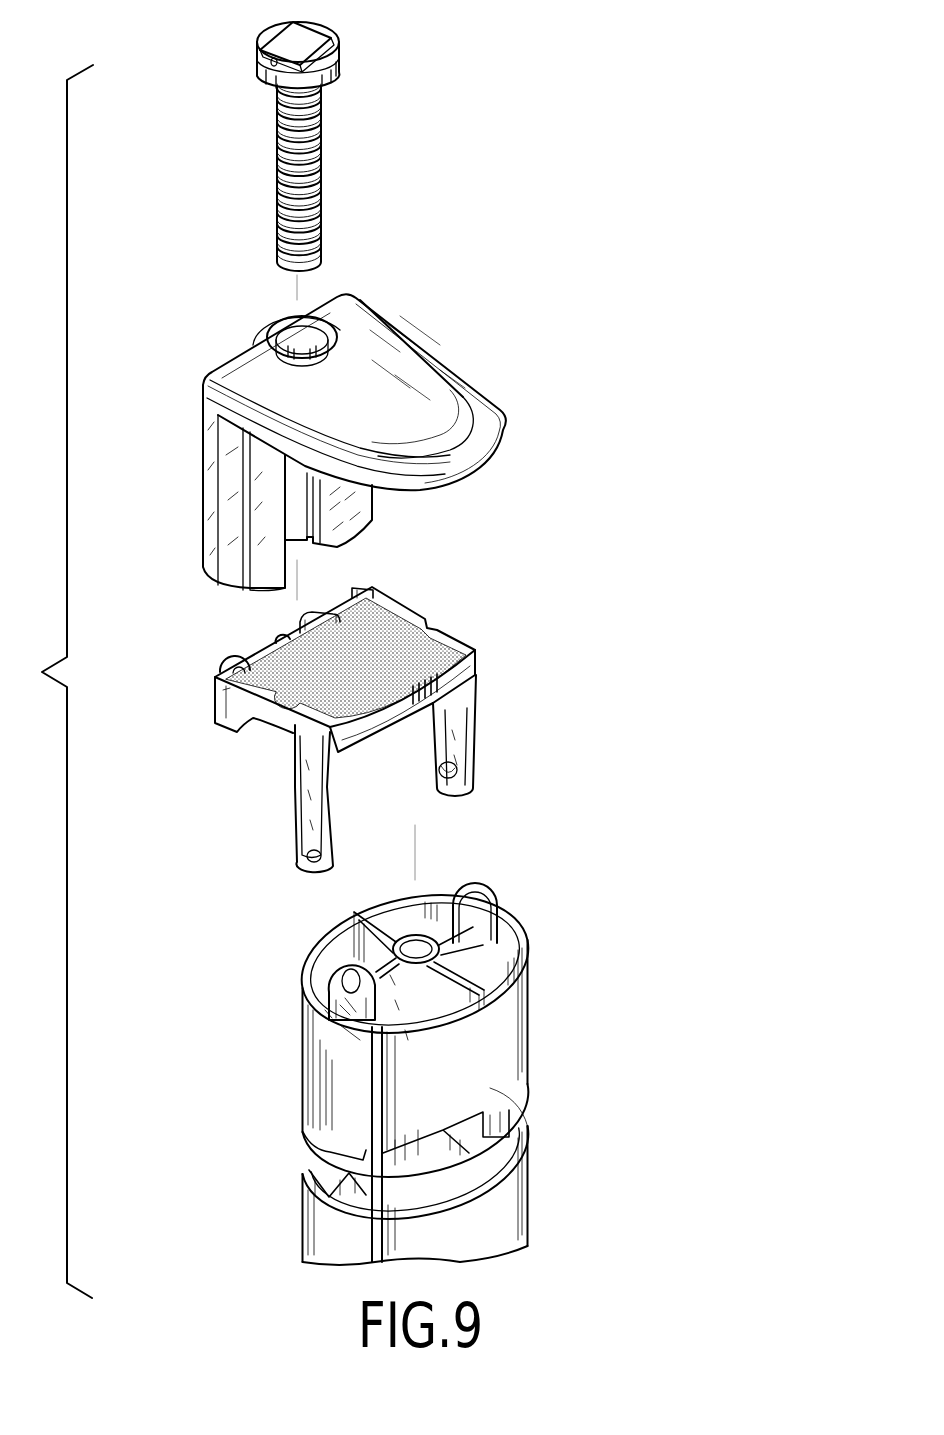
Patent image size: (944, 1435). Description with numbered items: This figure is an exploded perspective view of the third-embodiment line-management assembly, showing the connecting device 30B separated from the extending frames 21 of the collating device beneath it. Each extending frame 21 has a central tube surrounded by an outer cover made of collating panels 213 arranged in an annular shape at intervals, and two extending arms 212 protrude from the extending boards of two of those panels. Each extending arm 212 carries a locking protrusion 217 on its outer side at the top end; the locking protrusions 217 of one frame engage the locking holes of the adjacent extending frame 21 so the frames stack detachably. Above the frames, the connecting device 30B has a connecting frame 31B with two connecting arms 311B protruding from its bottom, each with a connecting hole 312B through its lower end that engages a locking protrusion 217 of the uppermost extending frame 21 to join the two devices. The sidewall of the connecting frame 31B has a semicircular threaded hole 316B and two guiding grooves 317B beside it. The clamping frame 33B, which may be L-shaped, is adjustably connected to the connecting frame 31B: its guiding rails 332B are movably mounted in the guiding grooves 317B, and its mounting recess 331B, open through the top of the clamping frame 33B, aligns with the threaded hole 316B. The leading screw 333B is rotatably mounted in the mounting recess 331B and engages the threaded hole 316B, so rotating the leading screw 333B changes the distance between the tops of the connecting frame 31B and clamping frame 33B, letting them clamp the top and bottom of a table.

The connecting device 30B is at (645, 449).
The leading screw 333B is at (307, 157).
The clamping frame 33B is at (318, 442).
The guiding rails 332B is at (262, 473).
The mounting recess 331B is at (295, 514).
The connecting frame 31B is at (342, 733).
The threaded hole 316B is at (283, 640).
The guiding grooves 317B is at (220, 658).
The connecting arms 311B is at (497, 760).
The connecting hole 312B is at (447, 780).
The extending frame 21 is at (435, 1070).
The extending arms 212 is at (475, 908).
The locking protrusion 217 is at (345, 975).
The collating panels 213 is at (316, 1070).